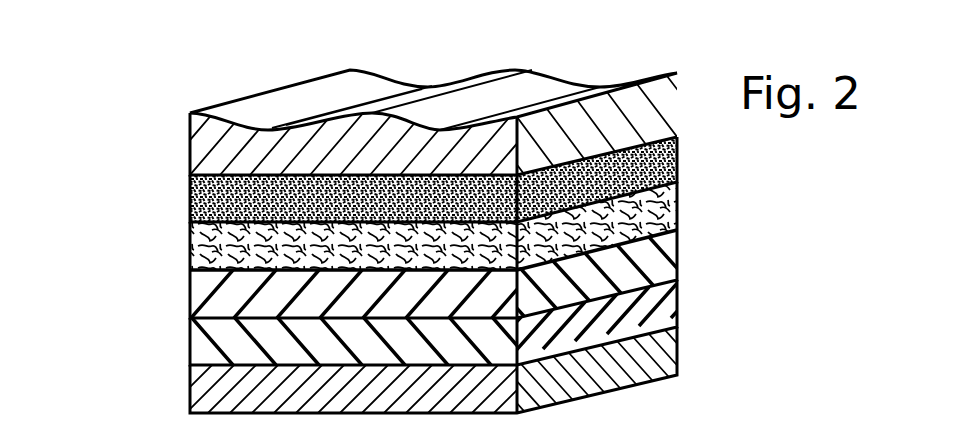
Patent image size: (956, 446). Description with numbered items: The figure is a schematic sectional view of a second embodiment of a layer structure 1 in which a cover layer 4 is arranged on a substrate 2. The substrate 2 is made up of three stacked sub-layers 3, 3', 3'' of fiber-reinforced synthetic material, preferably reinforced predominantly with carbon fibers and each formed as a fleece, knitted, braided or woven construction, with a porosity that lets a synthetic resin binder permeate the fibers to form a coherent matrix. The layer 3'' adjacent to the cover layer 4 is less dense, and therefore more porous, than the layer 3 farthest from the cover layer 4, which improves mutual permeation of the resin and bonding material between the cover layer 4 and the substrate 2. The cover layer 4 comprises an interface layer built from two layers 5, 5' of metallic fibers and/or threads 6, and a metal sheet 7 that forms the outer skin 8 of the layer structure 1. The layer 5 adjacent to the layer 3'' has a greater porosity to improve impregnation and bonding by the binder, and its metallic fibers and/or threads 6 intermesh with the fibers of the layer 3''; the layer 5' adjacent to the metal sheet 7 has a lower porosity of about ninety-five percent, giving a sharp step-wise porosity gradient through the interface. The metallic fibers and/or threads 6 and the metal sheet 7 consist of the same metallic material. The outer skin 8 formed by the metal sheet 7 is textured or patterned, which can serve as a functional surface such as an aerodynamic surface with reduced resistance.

The layer structure 1 is at (579, 69).
The substrate 2 is at (72, 437).
The layer of fiber-reinforced synthetic material 3 is at (409, 371).
The layer of fiber-reinforced synthetic material 3' is at (380, 325).
The layer of fiber-reinforced synthetic material 3'' is at (402, 278).
The cover layer 4 is at (72, 152).
The interface layer of metallic fibers and/or threads 5 is at (362, 226).
The layer of metallic fibers and/or threads 5' is at (362, 179).
The metallic fibers and/or threads 6 is at (190, 259).
The metal sheet 7 is at (200, 140).
The outer skin 8 is at (260, 113).